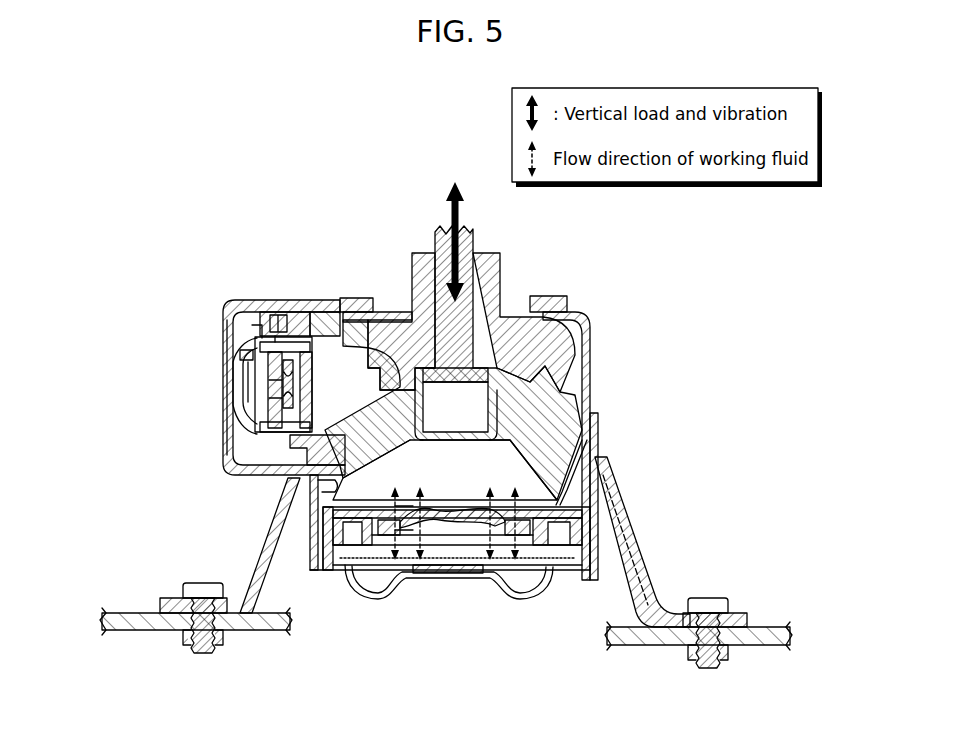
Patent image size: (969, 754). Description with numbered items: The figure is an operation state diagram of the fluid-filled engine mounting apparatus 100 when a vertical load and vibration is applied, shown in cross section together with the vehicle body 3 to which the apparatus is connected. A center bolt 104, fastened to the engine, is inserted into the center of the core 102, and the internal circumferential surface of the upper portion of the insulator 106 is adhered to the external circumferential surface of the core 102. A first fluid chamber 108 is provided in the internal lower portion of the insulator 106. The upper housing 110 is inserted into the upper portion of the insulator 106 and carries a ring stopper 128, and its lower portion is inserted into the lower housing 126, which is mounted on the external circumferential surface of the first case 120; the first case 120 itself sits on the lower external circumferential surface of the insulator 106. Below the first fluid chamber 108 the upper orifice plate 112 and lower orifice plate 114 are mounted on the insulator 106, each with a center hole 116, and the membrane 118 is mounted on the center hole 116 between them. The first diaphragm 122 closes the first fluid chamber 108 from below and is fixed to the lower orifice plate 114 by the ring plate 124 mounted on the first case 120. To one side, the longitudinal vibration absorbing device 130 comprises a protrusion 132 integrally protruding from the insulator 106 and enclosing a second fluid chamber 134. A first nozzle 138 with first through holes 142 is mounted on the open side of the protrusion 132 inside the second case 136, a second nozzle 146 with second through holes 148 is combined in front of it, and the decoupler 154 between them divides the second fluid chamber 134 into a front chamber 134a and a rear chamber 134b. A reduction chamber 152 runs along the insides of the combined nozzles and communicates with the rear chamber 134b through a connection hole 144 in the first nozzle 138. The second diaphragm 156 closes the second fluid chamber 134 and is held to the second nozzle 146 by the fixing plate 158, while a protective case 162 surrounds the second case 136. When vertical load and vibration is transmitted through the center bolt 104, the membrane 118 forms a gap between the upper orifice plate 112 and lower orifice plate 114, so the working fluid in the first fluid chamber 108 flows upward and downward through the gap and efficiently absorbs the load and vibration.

The fluid-filled engine mounting apparatus 100 is at (353, 131).
The core 102 is at (486, 258).
The center bolt 104 is at (437, 238).
The insulator 106 is at (546, 391).
The first fluid chamber 108 is at (522, 468).
The upper housing 110 is at (592, 322).
The upper orifice plate 112 is at (560, 507).
The lower orifice plate 114 is at (620, 531).
The center hole 116 is at (414, 510).
The membrane 118 is at (470, 528).
The first case 120 is at (606, 471).
The first diaphragm 122 is at (440, 574).
The ring plate 124 is at (353, 590).
The lower housing 126 is at (597, 421).
The ring stopper 128 is at (560, 298).
The longitudinal vibration absorbing device 130 is at (231, 299).
The protrusion 132 is at (362, 318).
The second fluid chamber 134 is at (262, 523).
The front chamber 134a is at (247, 412).
The rear chamber 134b is at (332, 410).
The second case 136 is at (316, 325).
The first nozzle 138 is at (286, 332).
The first through holes 142 is at (304, 394).
The connection hole 144 is at (334, 300).
The second nozzle 146 is at (271, 337).
The second through holes 148 is at (258, 418).
The reduction chamber 152 is at (279, 340).
The decoupler 154 is at (266, 383).
The second diaphragm 156 is at (234, 356).
The fixing plate 158 is at (262, 326).
The protective case 162 is at (228, 442).
The vehicle body 3 is at (125, 632).